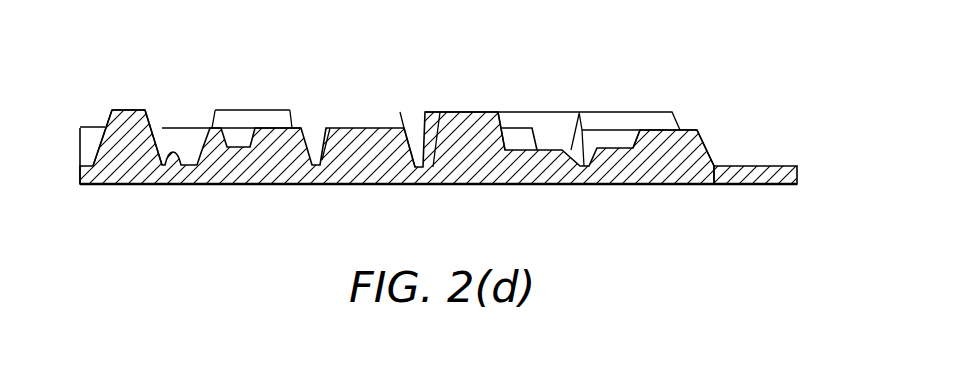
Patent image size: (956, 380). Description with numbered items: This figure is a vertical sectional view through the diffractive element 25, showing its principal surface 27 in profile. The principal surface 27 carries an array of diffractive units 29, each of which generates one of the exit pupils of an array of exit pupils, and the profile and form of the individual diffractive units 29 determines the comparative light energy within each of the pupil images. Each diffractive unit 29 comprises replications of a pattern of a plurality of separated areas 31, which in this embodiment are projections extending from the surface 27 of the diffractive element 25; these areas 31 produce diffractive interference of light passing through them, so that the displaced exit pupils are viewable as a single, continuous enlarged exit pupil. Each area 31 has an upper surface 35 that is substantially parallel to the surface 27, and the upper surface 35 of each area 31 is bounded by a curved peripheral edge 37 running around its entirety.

The diffractive element 25 is at (312, 84).
The principal surface 27 is at (761, 166).
The diffractive unit 29 is at (716, 195).
The separated area 31 is at (131, 112).
The upper surface 35 is at (113, 110).
The curved peripheral edge 37 is at (149, 112).